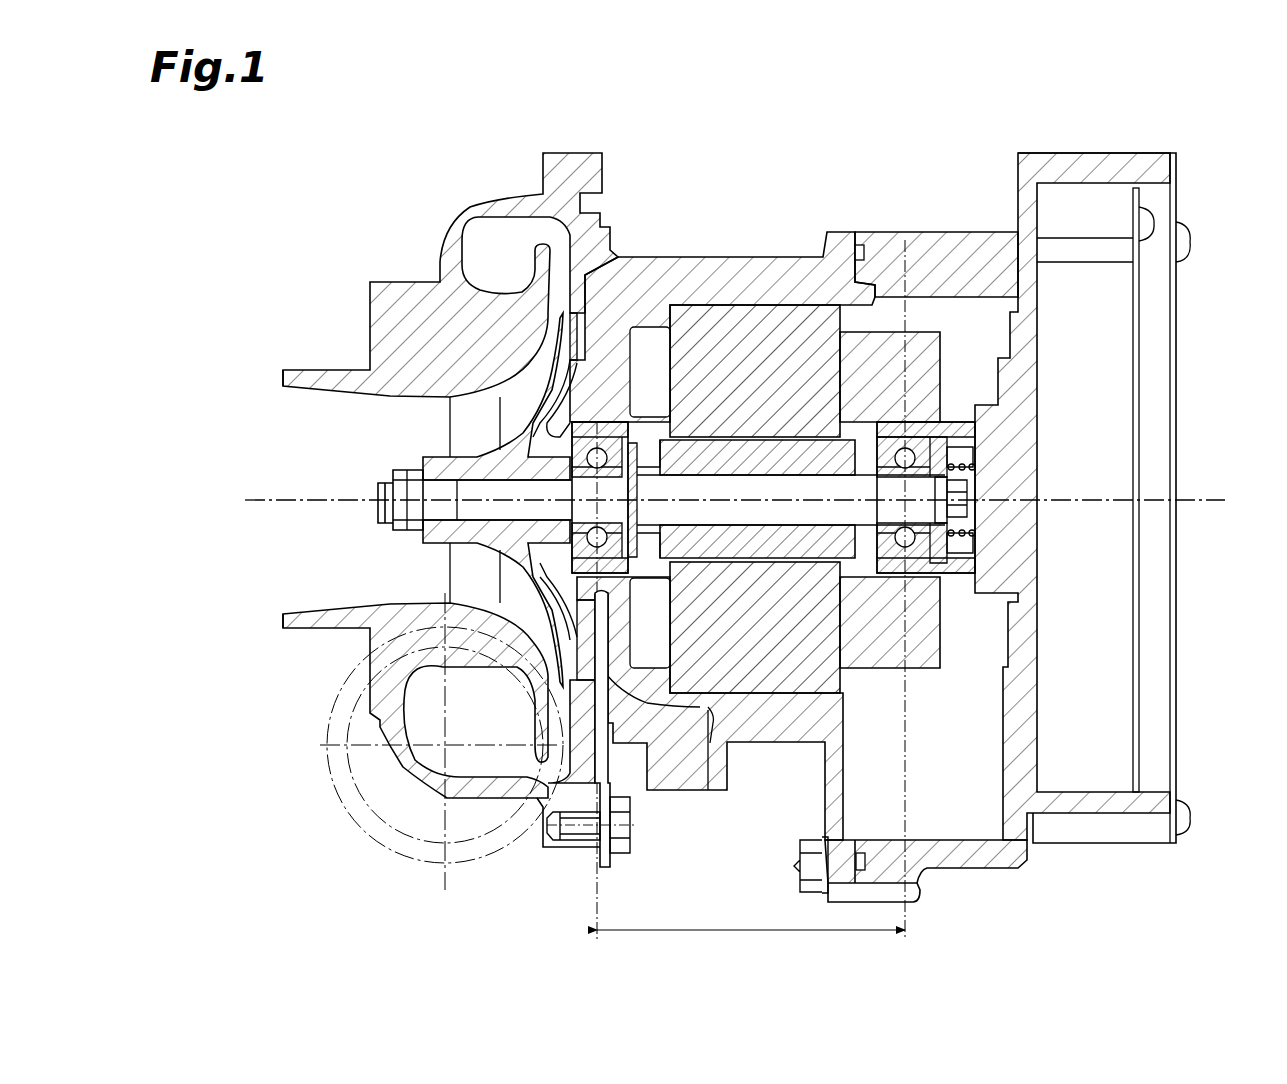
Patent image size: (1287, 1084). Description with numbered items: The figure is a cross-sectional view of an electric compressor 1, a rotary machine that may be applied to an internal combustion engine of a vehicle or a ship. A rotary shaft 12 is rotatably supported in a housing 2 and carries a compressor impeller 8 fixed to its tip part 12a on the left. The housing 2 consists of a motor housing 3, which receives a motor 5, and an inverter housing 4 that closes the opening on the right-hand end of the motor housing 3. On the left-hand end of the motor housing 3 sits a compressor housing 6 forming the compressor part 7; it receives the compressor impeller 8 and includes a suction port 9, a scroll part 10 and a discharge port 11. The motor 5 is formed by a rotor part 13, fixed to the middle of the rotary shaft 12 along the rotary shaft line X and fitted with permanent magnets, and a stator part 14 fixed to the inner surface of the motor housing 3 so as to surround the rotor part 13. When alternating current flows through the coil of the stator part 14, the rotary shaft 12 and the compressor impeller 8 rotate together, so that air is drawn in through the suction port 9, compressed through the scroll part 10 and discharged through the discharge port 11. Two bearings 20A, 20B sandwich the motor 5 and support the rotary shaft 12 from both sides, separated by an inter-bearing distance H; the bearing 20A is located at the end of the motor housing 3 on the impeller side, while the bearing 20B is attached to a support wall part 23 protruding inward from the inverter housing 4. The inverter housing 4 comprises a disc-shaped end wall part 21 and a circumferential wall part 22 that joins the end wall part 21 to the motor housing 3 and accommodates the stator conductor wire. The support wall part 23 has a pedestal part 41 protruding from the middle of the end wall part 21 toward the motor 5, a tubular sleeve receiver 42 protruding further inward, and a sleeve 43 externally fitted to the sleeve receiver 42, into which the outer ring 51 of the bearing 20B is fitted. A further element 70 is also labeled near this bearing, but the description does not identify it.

The electric compressor 1 is at (741, 509).
The housing 2 is at (630, 195).
The motor housing 3 is at (798, 538).
The inverter housing 4 is at (1073, 456).
The motor 5 is at (755, 609).
The compressor housing 6 is at (441, 522).
The compressor part 7 is at (373, 260).
The compressor impeller 8 is at (480, 450).
The suction port 9 is at (300, 413).
The scroll part 10 is at (467, 763).
The discharge port 11 is at (388, 850).
The rotary shaft 12 is at (723, 513).
The tip part 12a is at (425, 520).
The rotor part 13 is at (760, 560).
The stator part 14 is at (810, 677).
The bearing 20A is at (598, 420).
The bearing 20B is at (891, 551).
The end wall part 21 is at (1042, 332).
The circumferential wall part 22 is at (932, 232).
The support wall part 23 is at (963, 417).
The pedestal part 41 is at (976, 403).
The sleeve receiver 42 is at (957, 573).
The sleeve 43 is at (960, 600).
The outer ring 51 is at (913, 560).
The bearing holder 70 is at (953, 435).
The rotary shaft line X is at (1205, 500).
The inter-bearing distance H is at (751, 944).